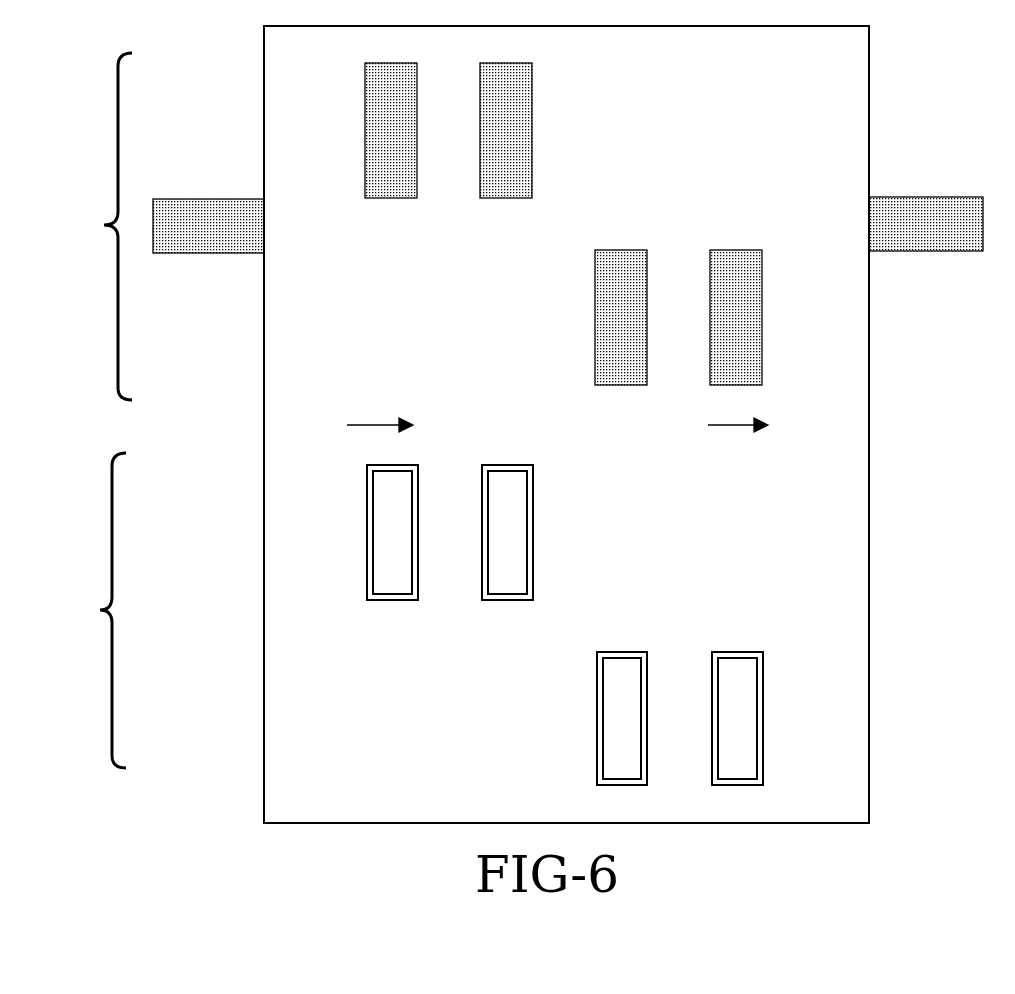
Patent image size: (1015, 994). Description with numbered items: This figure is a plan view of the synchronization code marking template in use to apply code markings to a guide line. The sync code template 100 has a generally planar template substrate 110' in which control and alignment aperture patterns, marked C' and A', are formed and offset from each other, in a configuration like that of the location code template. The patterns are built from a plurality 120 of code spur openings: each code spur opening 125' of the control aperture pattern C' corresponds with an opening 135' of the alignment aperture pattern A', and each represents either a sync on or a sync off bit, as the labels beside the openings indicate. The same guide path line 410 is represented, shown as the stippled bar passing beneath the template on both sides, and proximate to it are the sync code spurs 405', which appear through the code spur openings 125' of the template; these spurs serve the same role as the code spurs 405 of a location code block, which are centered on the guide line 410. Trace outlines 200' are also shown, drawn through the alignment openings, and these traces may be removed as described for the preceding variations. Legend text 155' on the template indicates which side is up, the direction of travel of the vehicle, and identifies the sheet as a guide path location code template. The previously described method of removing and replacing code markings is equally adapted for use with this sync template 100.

The AGV guide path code template 100 is at (378, 836).
The template substrate 110' is at (610, 447).
The plurality of code spur openings 120 is at (800, 548).
The code spur openings 125' is at (597, 236).
The code spur openings 135' is at (595, 639).
The legend text 155' is at (681, 237).
The trace outlines 200' is at (552, 625).
The code spurs 405 is at (453, 154).
The sync code spurs 405' is at (688, 295).
The guide line 410 is at (205, 232).